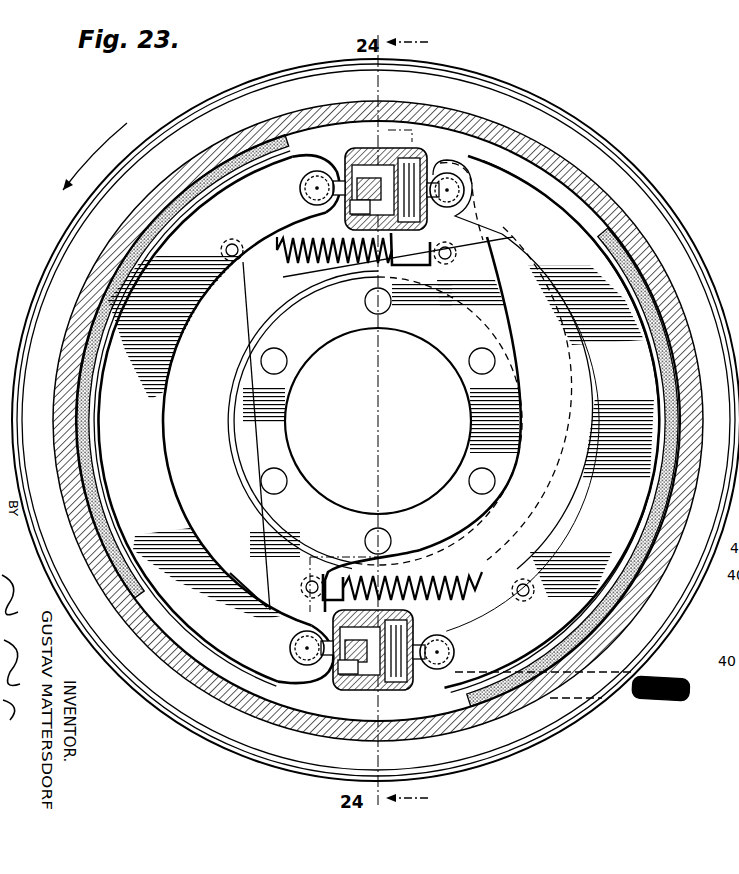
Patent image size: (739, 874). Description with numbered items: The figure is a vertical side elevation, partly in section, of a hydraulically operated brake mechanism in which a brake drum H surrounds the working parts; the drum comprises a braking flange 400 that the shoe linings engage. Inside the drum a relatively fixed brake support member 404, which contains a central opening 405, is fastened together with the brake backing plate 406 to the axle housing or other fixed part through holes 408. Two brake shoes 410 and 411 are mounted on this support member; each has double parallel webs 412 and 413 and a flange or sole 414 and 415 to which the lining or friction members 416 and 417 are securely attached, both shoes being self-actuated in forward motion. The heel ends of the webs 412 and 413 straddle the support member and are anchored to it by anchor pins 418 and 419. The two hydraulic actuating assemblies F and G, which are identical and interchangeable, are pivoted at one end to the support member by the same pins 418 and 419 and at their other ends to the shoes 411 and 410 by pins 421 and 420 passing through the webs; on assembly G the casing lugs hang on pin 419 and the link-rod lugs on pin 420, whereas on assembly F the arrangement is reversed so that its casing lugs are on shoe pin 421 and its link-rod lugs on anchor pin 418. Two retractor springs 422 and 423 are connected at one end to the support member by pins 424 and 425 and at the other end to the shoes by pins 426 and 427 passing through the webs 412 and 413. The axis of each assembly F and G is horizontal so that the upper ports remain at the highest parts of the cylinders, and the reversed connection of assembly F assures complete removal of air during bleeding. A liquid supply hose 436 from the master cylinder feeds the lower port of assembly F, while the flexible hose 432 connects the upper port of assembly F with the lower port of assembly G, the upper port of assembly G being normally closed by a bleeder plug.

The braking flange 400 is at (72, 318).
The brake support member 404 is at (288, 332).
The central opening 405 is at (285, 437).
The brake backing plate 406 is at (535, 100).
The holes 408 is at (478, 470).
The brake shoe 410 is at (150, 428).
The brake shoe 411 is at (610, 398).
The double parallel webs 412 is at (155, 456).
The double parallel webs 413 is at (607, 416).
The flange or sole 414 is at (100, 483).
The flange or sole 415 is at (648, 493).
The lining or friction member 416 is at (92, 498).
The lining or friction member 417 is at (652, 523).
The anchor pin 418 is at (300, 640).
The anchor pin 419 is at (450, 197).
The pin 420 is at (316, 192).
The pin 421 is at (440, 655).
The retractor spring 422 is at (281, 263).
The retractor spring 423 is at (458, 575).
The pin 424 is at (406, 251).
The pin 425 is at (268, 578).
The pin 426 is at (234, 256).
The pin 427 is at (529, 596).
The flexible hose 432 is at (560, 357).
The liquid supply hose 436 is at (655, 698).
The brake shoe actuating assembly G is at (348, 148).
The brake shoe actuating assembly F is at (372, 692).
The brake drum H is at (78, 270).